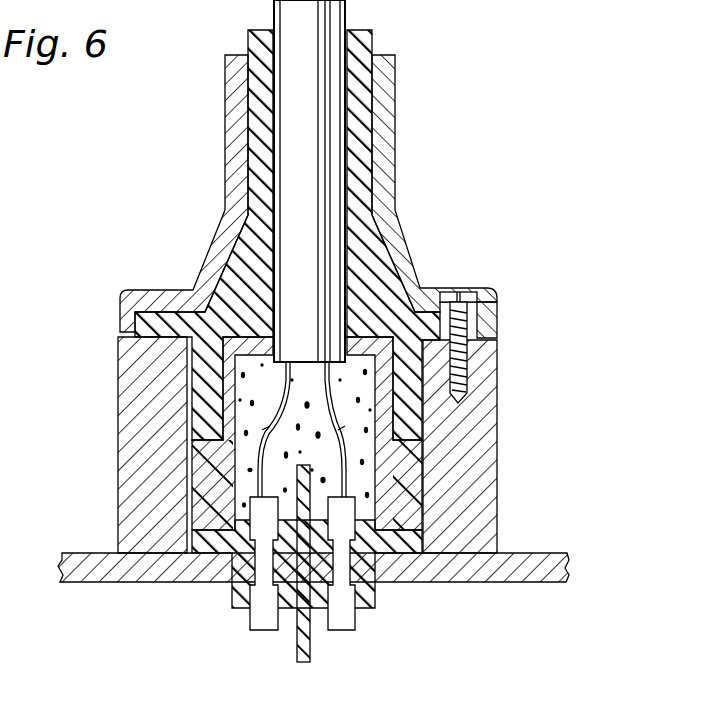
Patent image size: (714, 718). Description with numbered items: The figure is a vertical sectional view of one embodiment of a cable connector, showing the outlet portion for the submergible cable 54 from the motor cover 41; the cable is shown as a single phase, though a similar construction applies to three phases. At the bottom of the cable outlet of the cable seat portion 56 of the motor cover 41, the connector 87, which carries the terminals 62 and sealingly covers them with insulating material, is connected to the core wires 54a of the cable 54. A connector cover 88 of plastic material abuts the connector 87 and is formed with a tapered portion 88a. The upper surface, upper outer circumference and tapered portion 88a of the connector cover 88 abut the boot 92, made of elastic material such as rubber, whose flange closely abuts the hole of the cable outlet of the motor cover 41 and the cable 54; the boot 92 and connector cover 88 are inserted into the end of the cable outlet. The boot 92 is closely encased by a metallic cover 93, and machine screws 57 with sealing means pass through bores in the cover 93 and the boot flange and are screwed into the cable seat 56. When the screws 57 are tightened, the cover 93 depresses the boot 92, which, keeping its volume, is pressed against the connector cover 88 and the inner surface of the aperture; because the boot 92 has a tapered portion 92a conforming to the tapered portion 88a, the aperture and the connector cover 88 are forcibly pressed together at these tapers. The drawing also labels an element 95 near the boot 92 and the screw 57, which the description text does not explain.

The motor cover 41 is at (92, 583).
The submergible cable 54 is at (322, 232).
The core wires 54a is at (258, 476).
The cable seat portion 56 is at (492, 463).
The machine screws 57 is at (452, 293).
The terminals 62 is at (345, 632).
The connector 87 is at (376, 597).
The connector cover 88 is at (407, 516).
The tapered portion 88a is at (393, 443).
The boot 92 is at (385, 272).
The tapered portion 92a is at (400, 481).
The metallic cover 93 is at (487, 313).
The insulating band 95 is at (390, 383).